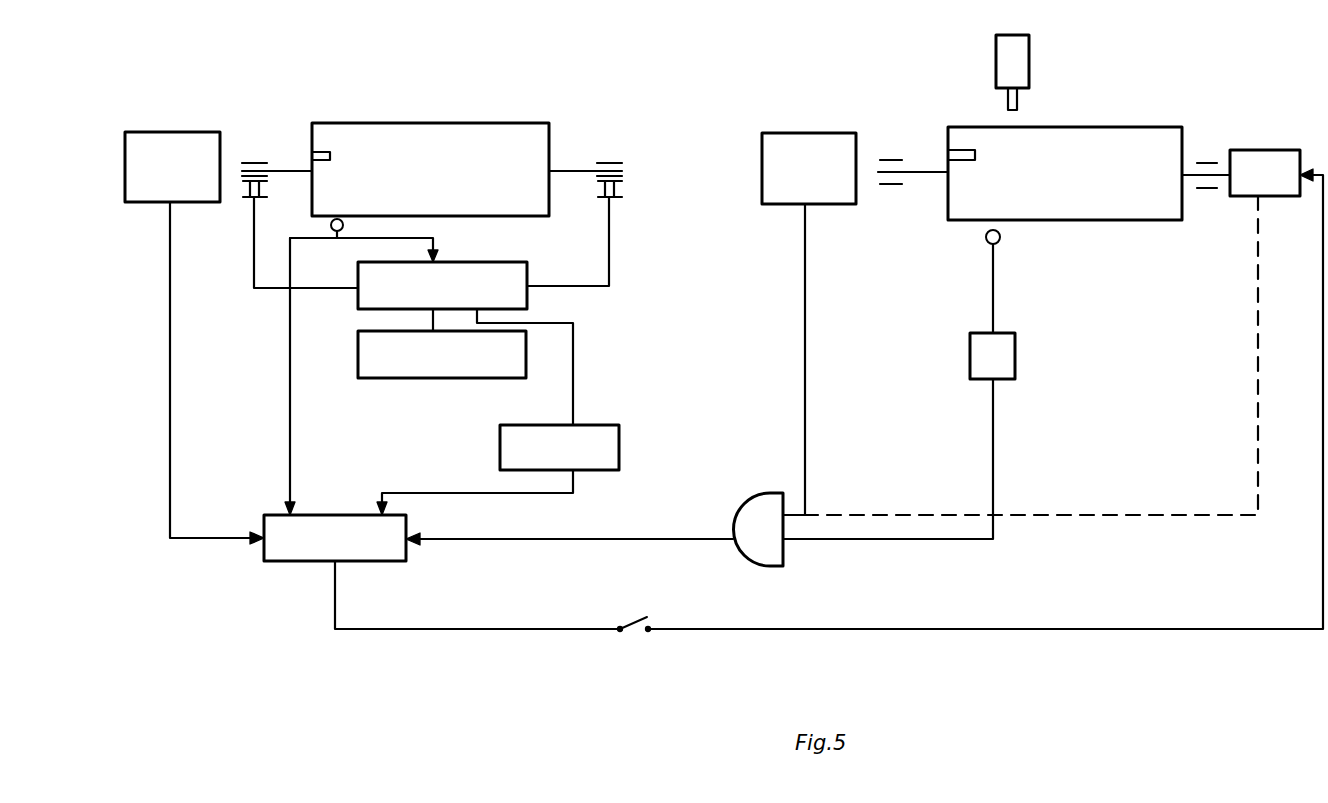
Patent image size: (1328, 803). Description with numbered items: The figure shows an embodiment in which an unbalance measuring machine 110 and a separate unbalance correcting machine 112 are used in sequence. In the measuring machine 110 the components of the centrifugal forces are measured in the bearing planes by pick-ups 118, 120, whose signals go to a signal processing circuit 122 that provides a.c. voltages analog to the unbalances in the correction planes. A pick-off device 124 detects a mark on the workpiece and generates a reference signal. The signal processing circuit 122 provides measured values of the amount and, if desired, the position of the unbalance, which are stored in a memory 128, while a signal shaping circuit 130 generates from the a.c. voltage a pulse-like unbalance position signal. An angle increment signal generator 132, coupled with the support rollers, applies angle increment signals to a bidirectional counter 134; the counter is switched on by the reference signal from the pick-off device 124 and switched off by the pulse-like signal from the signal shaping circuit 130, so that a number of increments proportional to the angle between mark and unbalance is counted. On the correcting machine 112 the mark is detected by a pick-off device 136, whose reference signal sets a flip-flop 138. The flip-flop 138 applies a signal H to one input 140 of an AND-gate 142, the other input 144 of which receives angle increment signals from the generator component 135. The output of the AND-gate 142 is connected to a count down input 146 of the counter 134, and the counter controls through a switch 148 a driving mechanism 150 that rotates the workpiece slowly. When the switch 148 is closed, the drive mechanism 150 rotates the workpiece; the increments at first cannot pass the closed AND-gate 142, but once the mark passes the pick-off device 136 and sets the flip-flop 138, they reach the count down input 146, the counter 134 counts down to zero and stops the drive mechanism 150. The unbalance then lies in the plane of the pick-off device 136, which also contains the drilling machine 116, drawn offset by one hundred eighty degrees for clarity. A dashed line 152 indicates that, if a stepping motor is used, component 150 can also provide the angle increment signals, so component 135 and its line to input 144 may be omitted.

The unbalance measuring machine 110 is at (467, 149).
The unbalance correcting machine 112 is at (1081, 145).
The drilling machine 116 is at (996, 66).
The pick-up 118 is at (245, 196).
The pick-up 120 is at (616, 192).
The signal processing circuit 122 is at (477, 268).
The pick-off device 124 is at (344, 225).
The memory 128 is at (473, 378).
The signal shaping circuit 130 is at (592, 428).
The angle increment signal generator 132 is at (160, 133).
The bidirectional counter 134 is at (297, 556).
The angle increment signal generator component 135 is at (817, 132).
The pick-off device 136 is at (1001, 236).
The flip-flop 138 is at (1013, 365).
The input of AND-gate 140 is at (800, 540).
The AND-gate 142 is at (760, 557).
The input of AND-gate 144 is at (796, 517).
The count down input 146 is at (450, 540).
The switch 148 is at (636, 624).
The driving mechanism 150 is at (1263, 150).
The dashed line 152 is at (1072, 517).